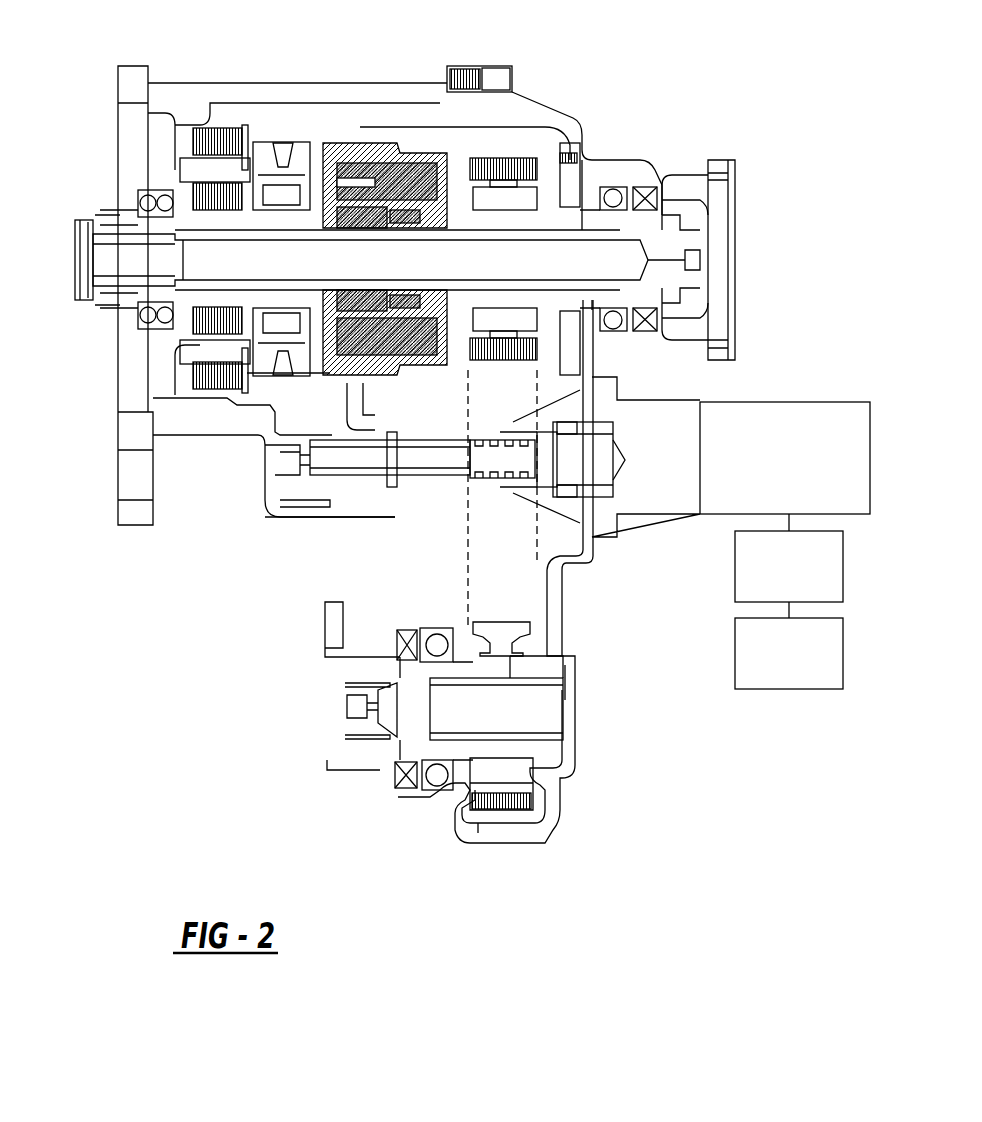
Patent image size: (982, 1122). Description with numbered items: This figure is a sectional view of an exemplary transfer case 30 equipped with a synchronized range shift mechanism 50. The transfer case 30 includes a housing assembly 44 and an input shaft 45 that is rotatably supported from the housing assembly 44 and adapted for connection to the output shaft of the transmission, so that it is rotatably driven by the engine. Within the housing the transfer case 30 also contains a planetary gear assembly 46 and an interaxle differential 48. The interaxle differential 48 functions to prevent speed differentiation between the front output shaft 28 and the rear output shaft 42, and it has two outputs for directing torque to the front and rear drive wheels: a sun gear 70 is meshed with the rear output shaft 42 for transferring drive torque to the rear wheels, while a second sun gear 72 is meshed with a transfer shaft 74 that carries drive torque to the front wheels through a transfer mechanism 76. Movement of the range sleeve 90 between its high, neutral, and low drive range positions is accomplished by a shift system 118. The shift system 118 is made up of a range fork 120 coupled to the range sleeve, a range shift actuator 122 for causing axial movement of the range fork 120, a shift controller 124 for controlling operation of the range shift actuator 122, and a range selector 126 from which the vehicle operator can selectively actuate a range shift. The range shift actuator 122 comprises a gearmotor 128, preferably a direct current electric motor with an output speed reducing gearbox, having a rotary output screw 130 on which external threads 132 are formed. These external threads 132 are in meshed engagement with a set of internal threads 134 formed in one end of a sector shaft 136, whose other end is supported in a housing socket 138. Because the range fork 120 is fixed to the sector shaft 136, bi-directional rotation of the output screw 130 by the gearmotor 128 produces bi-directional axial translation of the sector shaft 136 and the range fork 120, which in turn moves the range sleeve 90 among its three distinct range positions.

The front output shaft 28 is at (354, 738).
The transfer case 30 is at (615, 84).
The rear output shaft 42 is at (707, 242).
The housing assembly 44 is at (574, 593).
The input shaft 45 is at (93, 212).
The planetary gear assembly 46 is at (217, 128).
The interaxle differential 48 is at (417, 150).
The synchronized range shift mechanism 50 is at (270, 490).
The sun gear 70 is at (364, 230).
The second sun gear 72 is at (400, 230).
The transfer shaft 74 is at (454, 230).
The transfer mechanism 76 is at (550, 162).
The range sleeve 90 is at (315, 128).
The shift system 118 is at (432, 484).
The range fork 120 is at (377, 428).
The range shift actuator 122 is at (750, 399).
The shift controller 124 is at (842, 576).
The range selector 126 is at (842, 663).
The gearmotor 128 is at (845, 460).
The rotary output screw 130 is at (572, 462).
The external threads 132 is at (470, 440).
The internal threads 134 is at (485, 482).
The sector shaft 136 is at (310, 472).
The housing socket 138 is at (270, 444).